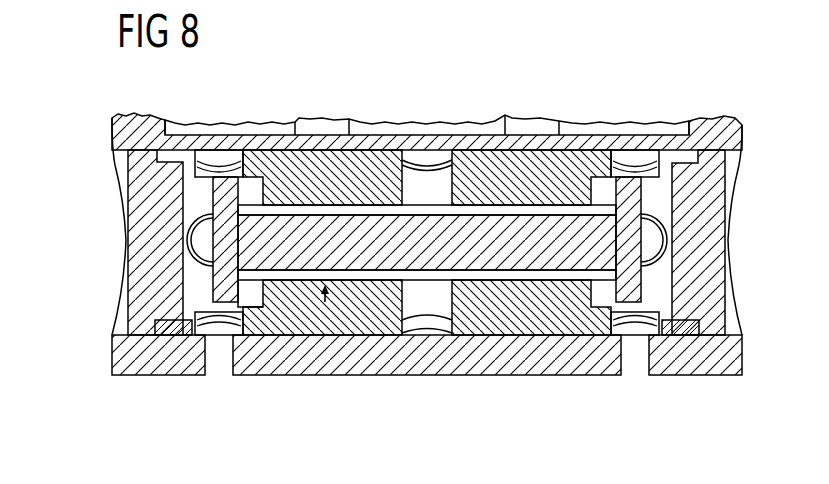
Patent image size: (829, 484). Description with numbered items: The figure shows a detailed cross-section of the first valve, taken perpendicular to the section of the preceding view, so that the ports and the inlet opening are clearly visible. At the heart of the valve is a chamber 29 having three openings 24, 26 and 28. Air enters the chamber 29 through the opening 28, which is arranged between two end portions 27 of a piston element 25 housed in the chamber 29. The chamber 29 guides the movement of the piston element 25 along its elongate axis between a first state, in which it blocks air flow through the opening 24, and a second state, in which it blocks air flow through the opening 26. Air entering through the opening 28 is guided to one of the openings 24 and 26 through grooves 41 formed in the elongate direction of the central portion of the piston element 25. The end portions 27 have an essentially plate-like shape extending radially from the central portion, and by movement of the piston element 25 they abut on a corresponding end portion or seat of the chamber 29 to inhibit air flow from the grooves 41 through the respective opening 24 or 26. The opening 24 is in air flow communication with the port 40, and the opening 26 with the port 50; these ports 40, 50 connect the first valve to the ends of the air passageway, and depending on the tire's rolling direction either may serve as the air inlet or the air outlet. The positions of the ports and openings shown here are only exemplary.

The opening 24 is at (590, 274).
The piston element 25 is at (352, 230).
The opening 26 is at (270, 277).
The end portion 27 is at (218, 193).
The opening 28 is at (425, 358).
The chamber 29 is at (322, 304).
The port 40 is at (218, 358).
The grooves 41 is at (497, 208).
The port 50 is at (637, 358).